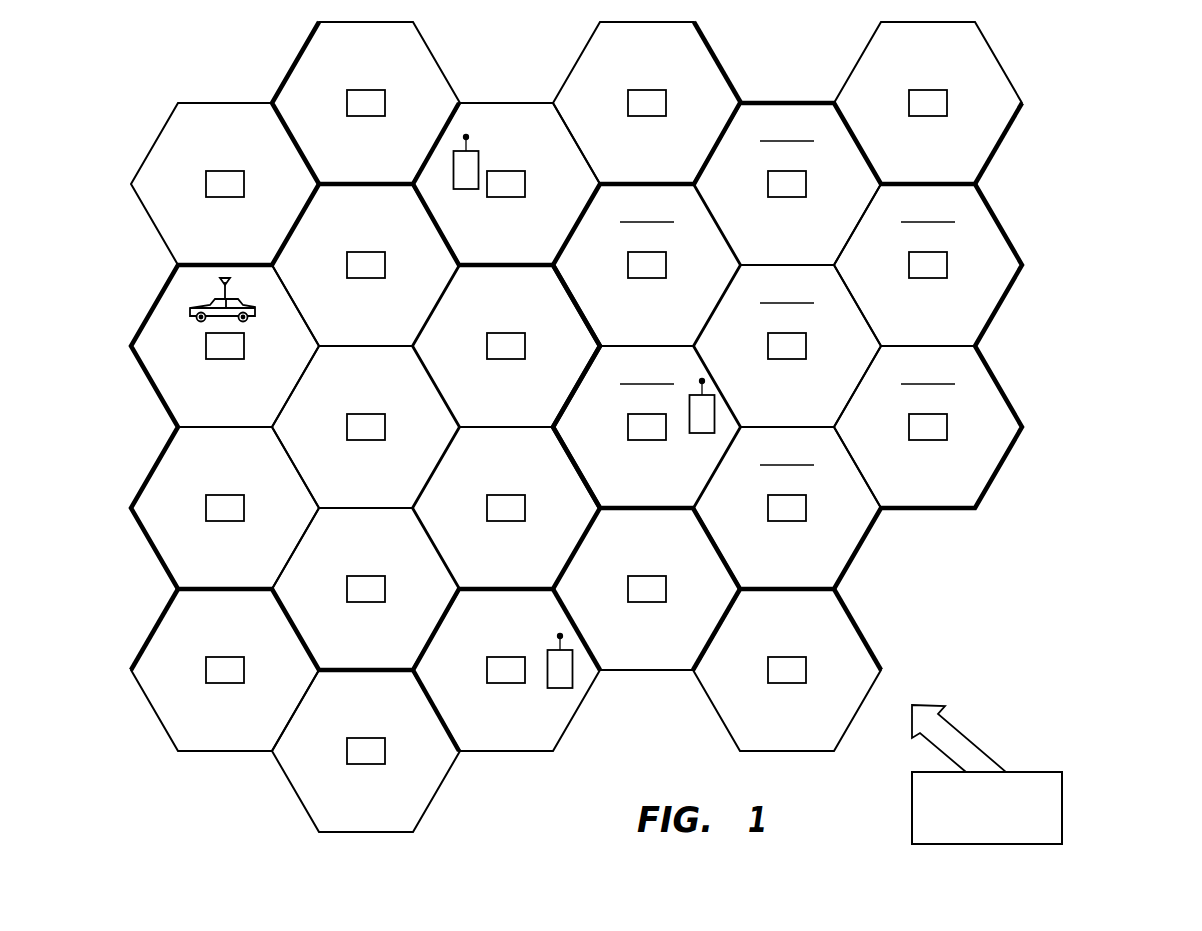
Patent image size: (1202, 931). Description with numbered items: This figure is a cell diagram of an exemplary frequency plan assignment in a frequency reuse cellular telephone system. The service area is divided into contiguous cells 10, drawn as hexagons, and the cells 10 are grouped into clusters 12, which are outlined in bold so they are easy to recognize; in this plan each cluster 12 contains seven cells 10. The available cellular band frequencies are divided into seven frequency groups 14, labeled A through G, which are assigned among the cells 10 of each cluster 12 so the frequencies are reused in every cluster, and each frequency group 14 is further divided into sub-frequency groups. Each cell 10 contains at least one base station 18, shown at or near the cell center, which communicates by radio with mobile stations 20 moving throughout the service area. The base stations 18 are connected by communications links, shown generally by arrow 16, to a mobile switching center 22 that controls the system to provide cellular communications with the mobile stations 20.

The cell 10 is at (435, 57).
The cluster 12 is at (247, 262).
The frequency group 14 is at (248, 391).
The communications link 16 is at (972, 737).
The base station 18 is at (930, 116).
The mobile station 20 is at (195, 320).
The mobile switching center 22 is at (1062, 793).